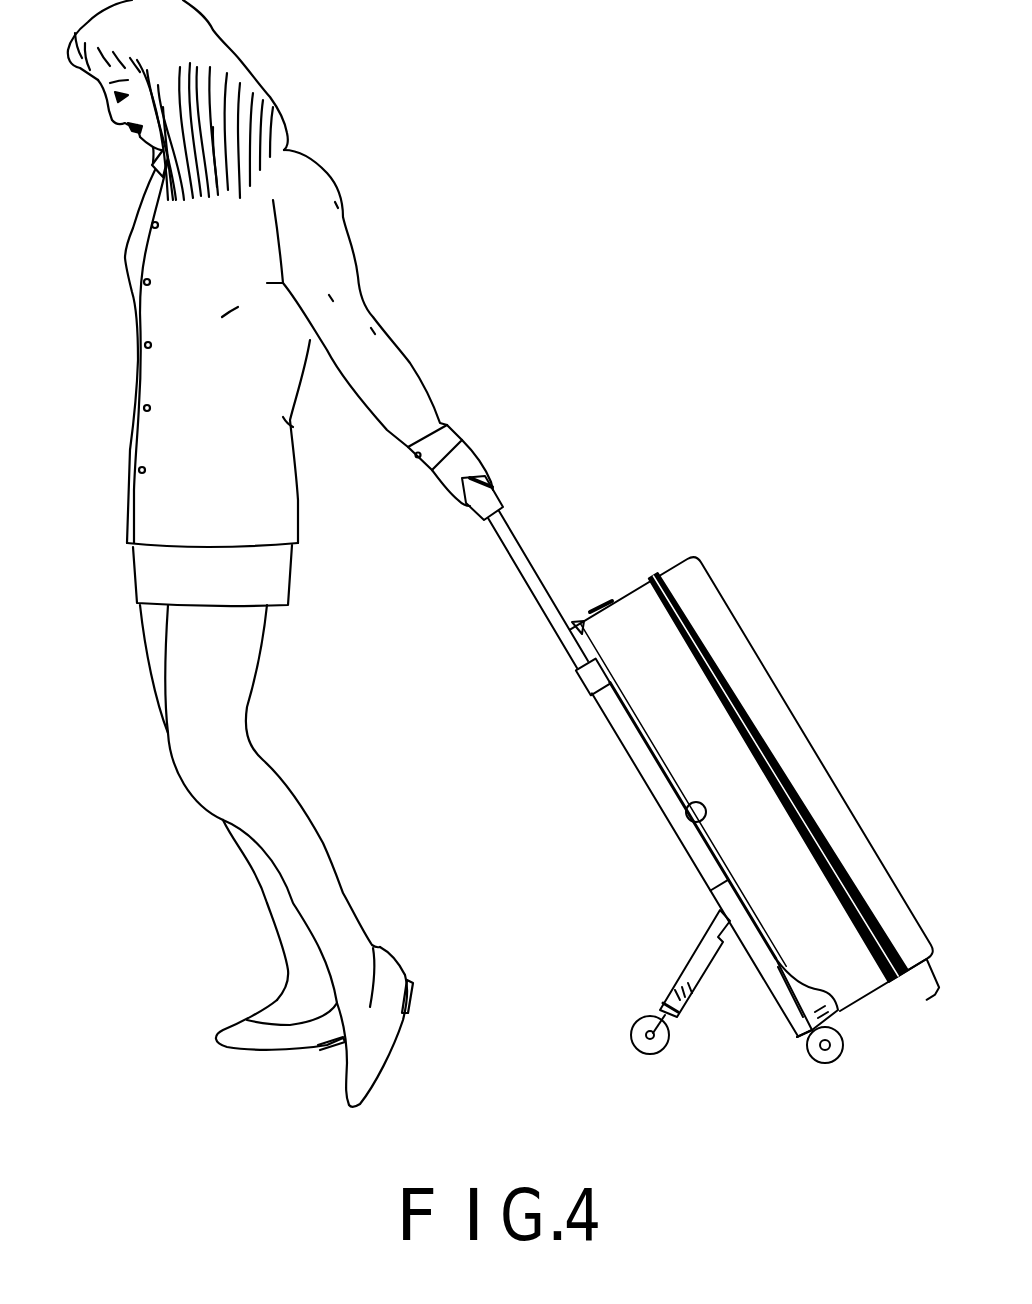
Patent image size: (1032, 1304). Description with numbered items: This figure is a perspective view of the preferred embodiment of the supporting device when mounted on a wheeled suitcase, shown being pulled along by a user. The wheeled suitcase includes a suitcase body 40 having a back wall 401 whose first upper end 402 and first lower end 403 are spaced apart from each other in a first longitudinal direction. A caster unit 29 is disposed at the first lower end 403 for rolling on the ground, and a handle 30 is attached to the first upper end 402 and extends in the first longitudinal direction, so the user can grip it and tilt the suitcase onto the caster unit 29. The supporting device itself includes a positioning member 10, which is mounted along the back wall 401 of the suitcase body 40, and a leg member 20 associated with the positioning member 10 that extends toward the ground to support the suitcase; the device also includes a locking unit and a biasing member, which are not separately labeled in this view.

The positioning member 10 is at (762, 995).
The leg member 20 is at (687, 957).
The caster unit 29 is at (823, 1063).
The handle 30 is at (527, 577).
The suitcase body 40 is at (743, 633).
The back wall 401 is at (690, 798).
The first upper end 402 is at (592, 612).
The first lower end 403 is at (840, 1012).